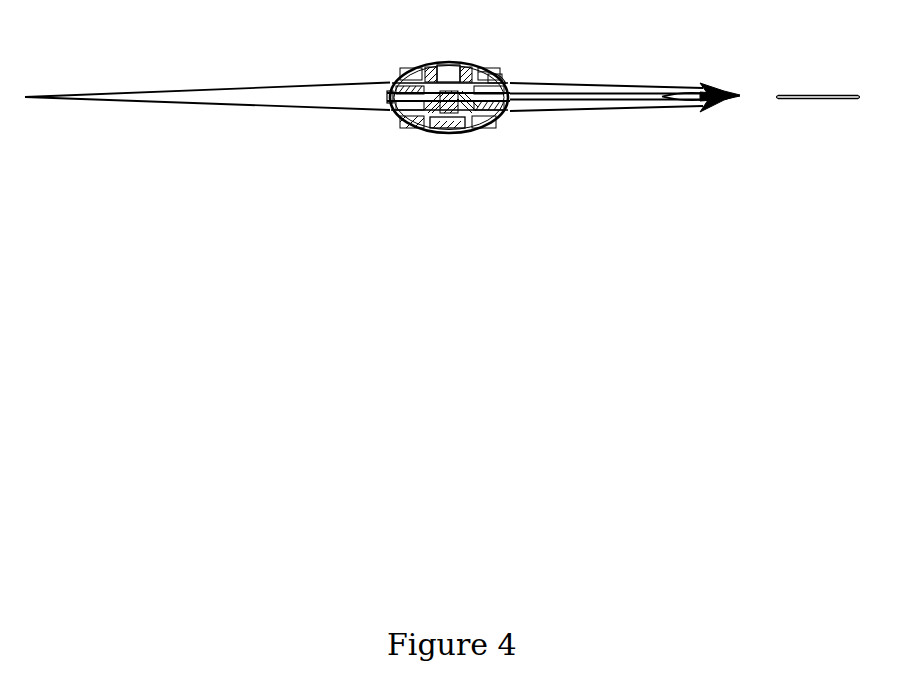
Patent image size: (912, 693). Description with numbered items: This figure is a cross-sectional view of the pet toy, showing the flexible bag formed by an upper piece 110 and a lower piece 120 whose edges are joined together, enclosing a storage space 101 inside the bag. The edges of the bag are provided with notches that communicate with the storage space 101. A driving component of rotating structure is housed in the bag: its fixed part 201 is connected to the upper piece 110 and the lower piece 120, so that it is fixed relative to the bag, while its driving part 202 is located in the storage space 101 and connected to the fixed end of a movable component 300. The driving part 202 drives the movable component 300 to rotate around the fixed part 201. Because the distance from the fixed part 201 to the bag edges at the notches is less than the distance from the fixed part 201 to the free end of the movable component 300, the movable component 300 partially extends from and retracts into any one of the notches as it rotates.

The storage space 101 is at (382, 92).
The upper piece 110 is at (258, 81).
The lower piece 120 is at (270, 111).
The fixed part 201 is at (468, 63).
The driving part 202 is at (504, 79).
The movable component 300 is at (606, 93).